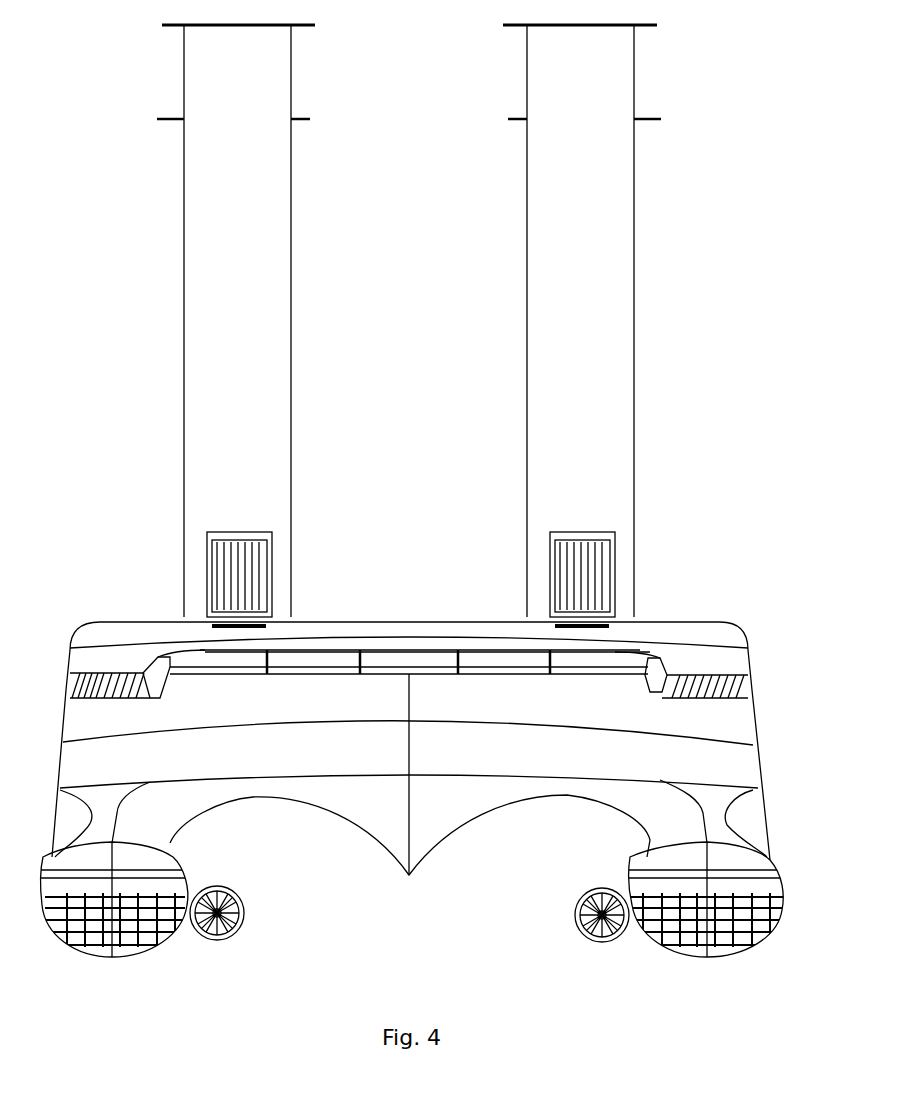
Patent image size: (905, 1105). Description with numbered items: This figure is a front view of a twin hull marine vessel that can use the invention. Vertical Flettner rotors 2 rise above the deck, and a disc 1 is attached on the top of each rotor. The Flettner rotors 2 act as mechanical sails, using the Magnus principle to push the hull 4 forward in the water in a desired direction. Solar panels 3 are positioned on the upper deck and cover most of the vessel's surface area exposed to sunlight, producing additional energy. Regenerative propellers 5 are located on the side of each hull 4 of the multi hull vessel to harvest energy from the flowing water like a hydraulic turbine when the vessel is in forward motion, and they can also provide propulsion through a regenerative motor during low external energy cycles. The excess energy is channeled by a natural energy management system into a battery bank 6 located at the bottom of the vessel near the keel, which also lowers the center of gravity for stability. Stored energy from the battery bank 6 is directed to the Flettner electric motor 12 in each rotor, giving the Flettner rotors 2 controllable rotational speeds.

The disc 1 is at (652, 28).
The Flettner rotors 2 is at (594, 265).
The solar panels 3 is at (380, 620).
The hull 4 is at (783, 866).
The regenerative propellers 5 is at (243, 900).
The battery bank 6 is at (167, 902).
The Flettner electric motor 12 is at (614, 545).